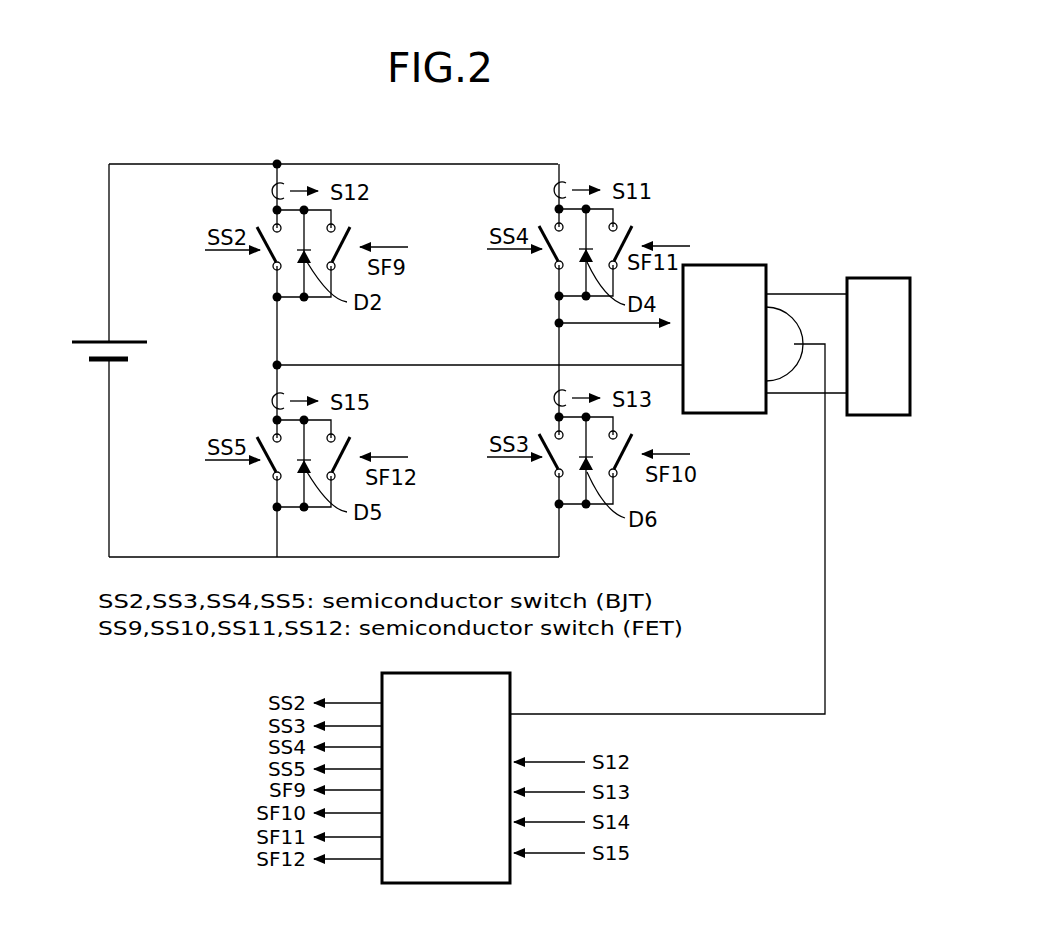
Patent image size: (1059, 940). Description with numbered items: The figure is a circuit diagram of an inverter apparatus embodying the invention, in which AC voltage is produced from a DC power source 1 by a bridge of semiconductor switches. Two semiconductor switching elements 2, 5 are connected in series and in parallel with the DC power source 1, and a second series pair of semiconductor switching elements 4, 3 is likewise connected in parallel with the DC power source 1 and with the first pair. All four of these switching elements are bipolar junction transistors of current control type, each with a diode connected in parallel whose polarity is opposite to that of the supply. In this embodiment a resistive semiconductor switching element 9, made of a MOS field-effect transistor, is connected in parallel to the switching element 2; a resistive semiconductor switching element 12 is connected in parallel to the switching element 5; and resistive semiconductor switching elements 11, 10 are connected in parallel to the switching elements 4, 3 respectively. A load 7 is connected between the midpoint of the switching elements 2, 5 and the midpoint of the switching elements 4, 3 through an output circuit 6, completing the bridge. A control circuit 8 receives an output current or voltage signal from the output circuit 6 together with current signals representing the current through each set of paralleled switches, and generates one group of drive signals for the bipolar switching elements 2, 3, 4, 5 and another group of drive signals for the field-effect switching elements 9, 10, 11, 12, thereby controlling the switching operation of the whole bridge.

The DC power source 1 is at (85, 358).
The semiconductor switching element 2 is at (263, 266).
The semiconductor switching element 3 is at (546, 473).
The semiconductor switching element 4 is at (546, 265).
The semiconductor switching element 5 is at (263, 476).
The output circuit 6 is at (735, 265).
The load 7 is at (870, 278).
The control circuit 8 is at (510, 698).
The resistive semiconductor switching element 9 is at (354, 239).
The resistive semiconductor switching element 10 is at (636, 447).
The resistive semiconductor switching element 11 is at (636, 239).
The resistive semiconductor switching element 12 is at (354, 449).